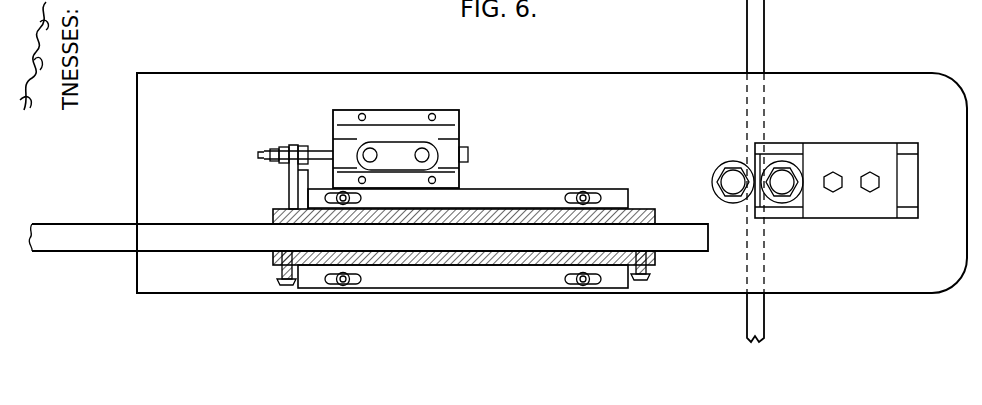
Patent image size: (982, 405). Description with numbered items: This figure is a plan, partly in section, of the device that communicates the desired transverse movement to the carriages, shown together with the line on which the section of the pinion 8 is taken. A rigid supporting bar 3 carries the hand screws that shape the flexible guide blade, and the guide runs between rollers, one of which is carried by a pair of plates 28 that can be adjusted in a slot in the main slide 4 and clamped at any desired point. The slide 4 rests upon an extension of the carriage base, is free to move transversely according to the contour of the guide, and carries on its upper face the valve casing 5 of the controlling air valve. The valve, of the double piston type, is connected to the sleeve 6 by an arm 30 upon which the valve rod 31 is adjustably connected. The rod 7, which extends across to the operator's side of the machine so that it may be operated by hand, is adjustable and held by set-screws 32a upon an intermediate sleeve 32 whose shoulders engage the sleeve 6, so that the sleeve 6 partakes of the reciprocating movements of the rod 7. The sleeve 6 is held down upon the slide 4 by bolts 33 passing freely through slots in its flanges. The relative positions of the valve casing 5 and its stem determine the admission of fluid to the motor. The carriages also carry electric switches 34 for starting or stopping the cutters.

The rigid supporting bar 3 is at (757, 38).
The slide 4 is at (552, 183).
The valve casing 5 is at (442, 133).
The sleeve 6 is at (484, 207).
The rod 7 is at (165, 235).
The pinion 8 is at (710, 66).
The plate 28 is at (833, 155).
The arm 30 is at (289, 183).
The valve rod 31 is at (267, 154).
The intermediate sleeve 32 is at (428, 258).
The set-screws 32a is at (278, 280).
The bolts 33 is at (588, 190).
The electric switches 34 is at (432, 158).